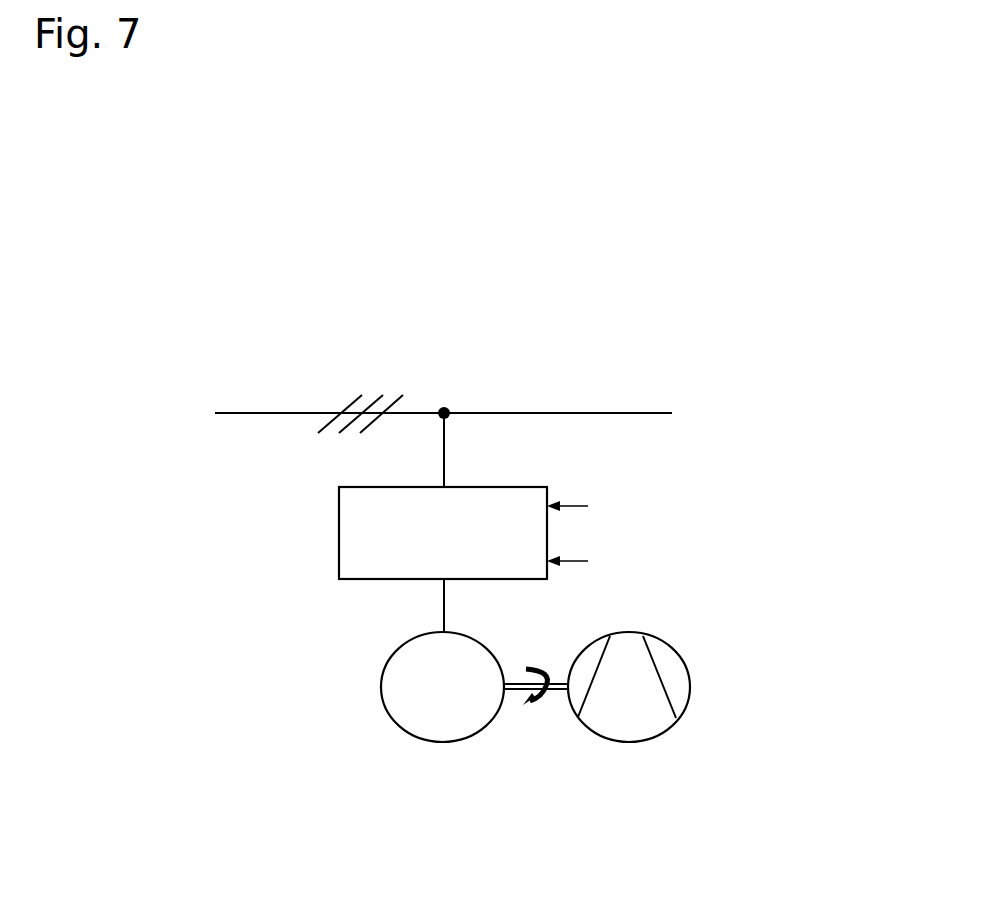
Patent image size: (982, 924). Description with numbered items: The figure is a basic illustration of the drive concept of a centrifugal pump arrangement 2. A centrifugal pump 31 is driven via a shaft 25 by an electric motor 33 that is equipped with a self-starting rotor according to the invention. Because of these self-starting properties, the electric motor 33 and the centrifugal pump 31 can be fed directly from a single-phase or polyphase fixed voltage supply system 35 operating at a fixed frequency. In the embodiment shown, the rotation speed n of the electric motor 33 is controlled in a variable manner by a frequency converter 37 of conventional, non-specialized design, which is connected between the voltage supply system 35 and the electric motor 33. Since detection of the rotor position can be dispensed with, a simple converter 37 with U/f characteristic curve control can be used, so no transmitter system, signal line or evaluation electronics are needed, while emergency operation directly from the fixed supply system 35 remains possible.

The centrifugal pump arrangement 2 is at (539, 772).
The shaft 25 is at (557, 692).
The centrifugal pump 31 is at (690, 690).
The electric motor 33 is at (382, 683).
The voltage supply system 35 is at (278, 413).
The frequency converter 37 is at (465, 545).